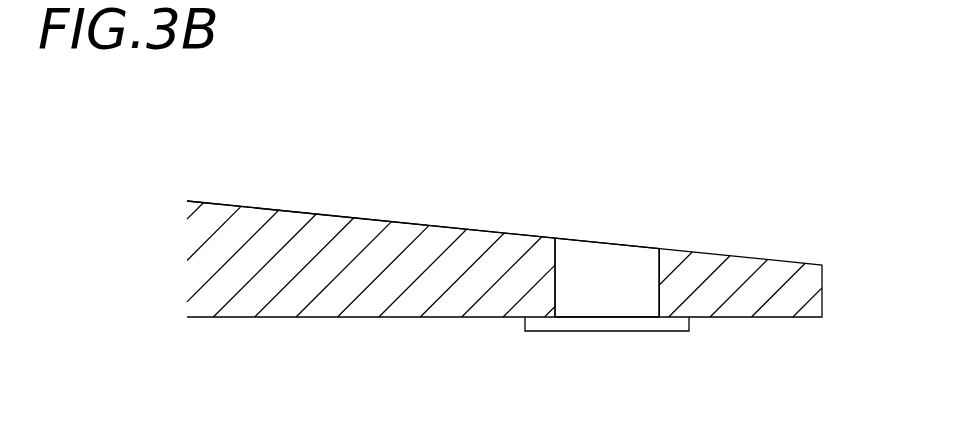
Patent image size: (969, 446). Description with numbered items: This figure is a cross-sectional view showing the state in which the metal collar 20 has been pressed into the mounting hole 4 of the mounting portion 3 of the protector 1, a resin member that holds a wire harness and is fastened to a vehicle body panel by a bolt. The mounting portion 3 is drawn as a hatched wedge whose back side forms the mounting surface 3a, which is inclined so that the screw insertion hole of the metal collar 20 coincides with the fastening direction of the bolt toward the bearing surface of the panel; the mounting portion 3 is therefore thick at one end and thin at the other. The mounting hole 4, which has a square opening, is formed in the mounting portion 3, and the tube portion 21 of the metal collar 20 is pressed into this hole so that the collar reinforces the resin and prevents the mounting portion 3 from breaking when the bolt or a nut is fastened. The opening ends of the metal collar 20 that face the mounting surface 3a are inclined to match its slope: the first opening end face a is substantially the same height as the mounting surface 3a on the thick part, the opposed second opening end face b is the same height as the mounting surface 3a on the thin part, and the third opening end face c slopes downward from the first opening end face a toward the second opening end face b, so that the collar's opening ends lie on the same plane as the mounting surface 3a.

The protector 1 is at (288, 185).
The mounting portion 3 is at (292, 293).
The mounting surface 3a is at (378, 219).
The first opening end face a is at (555, 238).
The second opening end face b is at (660, 253).
The third opening end face c is at (612, 244).
The tube portion 21 is at (577, 293).
The mounting hole 4 is at (653, 282).
The metal collar 20 is at (602, 346).